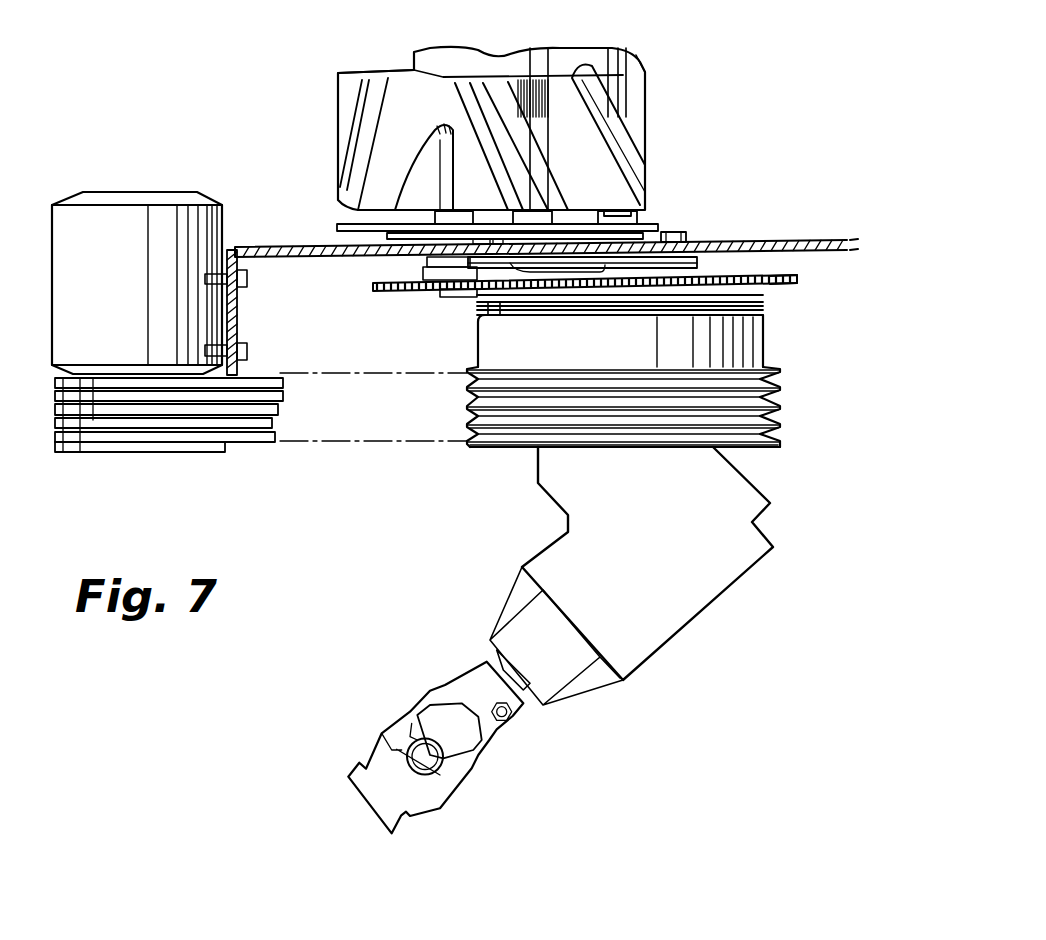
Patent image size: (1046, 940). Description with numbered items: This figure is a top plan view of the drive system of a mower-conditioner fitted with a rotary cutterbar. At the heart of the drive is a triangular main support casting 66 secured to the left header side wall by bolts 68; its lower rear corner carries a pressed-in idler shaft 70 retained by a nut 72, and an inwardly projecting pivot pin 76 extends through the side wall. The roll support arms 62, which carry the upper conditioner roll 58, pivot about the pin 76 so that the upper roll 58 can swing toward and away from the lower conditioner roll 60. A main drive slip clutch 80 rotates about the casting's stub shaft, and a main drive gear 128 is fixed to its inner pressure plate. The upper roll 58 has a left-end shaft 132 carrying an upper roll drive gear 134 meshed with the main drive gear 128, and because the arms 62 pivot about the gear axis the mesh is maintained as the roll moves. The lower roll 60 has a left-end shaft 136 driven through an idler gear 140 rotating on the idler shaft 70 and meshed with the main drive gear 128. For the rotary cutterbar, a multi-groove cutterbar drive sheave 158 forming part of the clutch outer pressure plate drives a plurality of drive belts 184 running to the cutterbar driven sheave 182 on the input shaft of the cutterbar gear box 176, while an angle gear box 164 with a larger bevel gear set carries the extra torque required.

The upper conditioner roll 58 is at (338, 104).
The lower conditioner roll 60 is at (648, 72).
The shaft 136 is at (530, 217).
The pivot pin 76 is at (640, 172).
The shaft 132 is at (395, 233).
The bolts 68 is at (487, 230).
The roll support arms 62 is at (648, 223).
The idler shaft 70 is at (677, 233).
The nut 72 is at (687, 240).
The main support casting 66 is at (705, 258).
The upper roll drive gear 134 is at (373, 287).
The idler gear 140 is at (797, 280).
The cutterbar gear box 176 is at (120, 310).
The main drive slip clutch 80 is at (478, 343).
The main drive gear 128 is at (658, 306).
The cutterbar drive sheave or pulley 158 is at (780, 400).
The drive belts 184 is at (283, 383).
The cutterbar driven sheave or pulley 182 is at (82, 452).
The angle gear box 164 is at (687, 627).